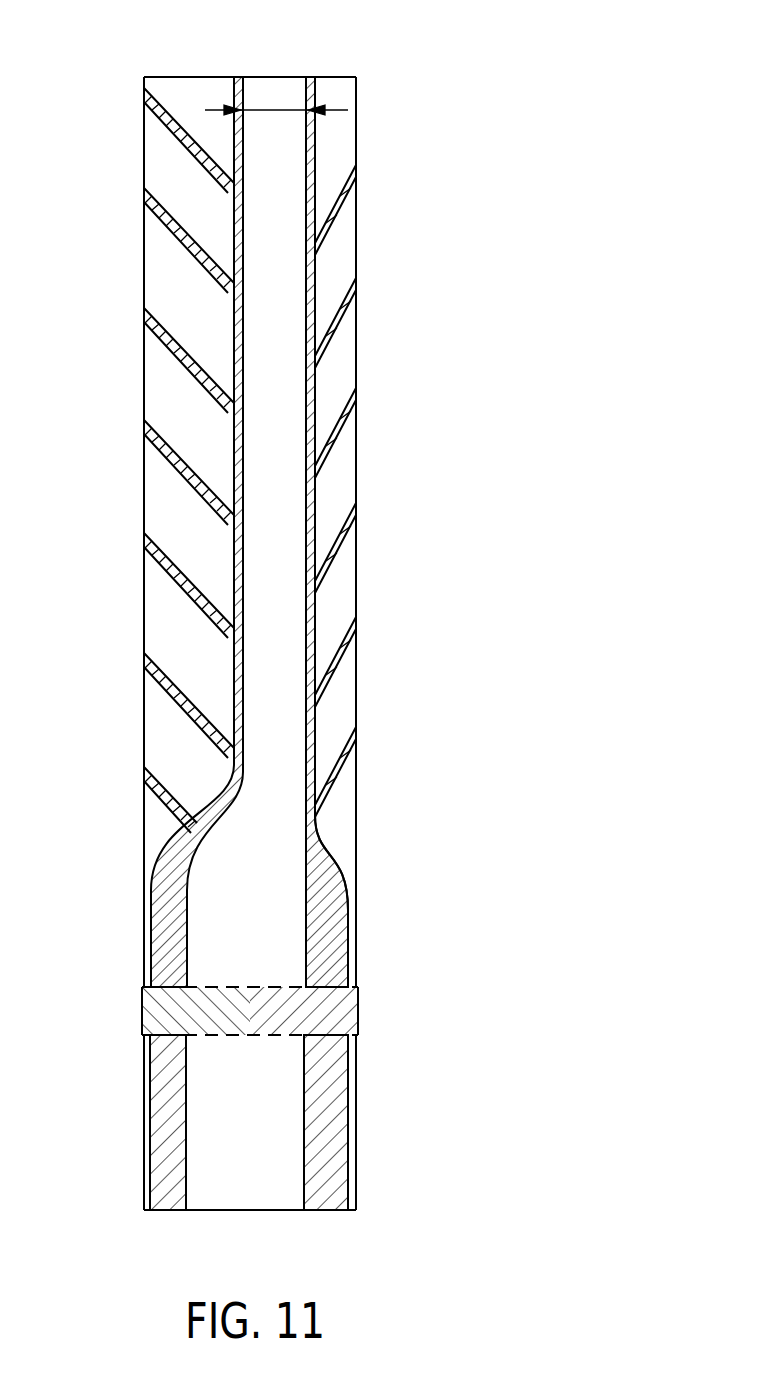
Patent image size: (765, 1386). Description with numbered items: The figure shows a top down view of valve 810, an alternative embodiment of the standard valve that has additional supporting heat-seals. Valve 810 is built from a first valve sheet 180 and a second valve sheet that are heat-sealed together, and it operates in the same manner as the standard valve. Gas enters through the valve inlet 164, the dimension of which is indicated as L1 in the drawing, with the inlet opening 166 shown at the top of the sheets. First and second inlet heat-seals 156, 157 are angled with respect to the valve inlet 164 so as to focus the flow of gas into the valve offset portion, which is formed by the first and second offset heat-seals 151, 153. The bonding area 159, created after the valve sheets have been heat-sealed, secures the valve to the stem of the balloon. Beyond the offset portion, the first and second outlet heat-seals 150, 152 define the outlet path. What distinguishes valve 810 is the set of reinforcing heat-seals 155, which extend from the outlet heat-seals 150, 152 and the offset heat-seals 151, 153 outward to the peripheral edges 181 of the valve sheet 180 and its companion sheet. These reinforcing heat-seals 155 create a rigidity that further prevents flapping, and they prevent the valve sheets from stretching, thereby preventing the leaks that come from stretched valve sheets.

The valve 810 is at (455, 360).
The first valve sheet 180 is at (350, 135).
The peripheral edges 181 is at (144, 262).
The inlet opening 166 is at (276, 77).
The inner tube diameter L1 is at (277, 115).
The second offset heat-seal 153 is at (173, 847).
The first outlet heat-seal 150 is at (315, 445).
The first offset heat-seal 151 is at (330, 888).
The second outlet heat-seal 152 is at (234, 443).
The reinforcing heat-seals 155 is at (175, 583).
The bonding area 159 is at (356, 1012).
The second inlet heat-seal 157 is at (155, 1113).
The first inlet heat-seal 156 is at (343, 1113).
The valve inlet 164 is at (247, 1210).